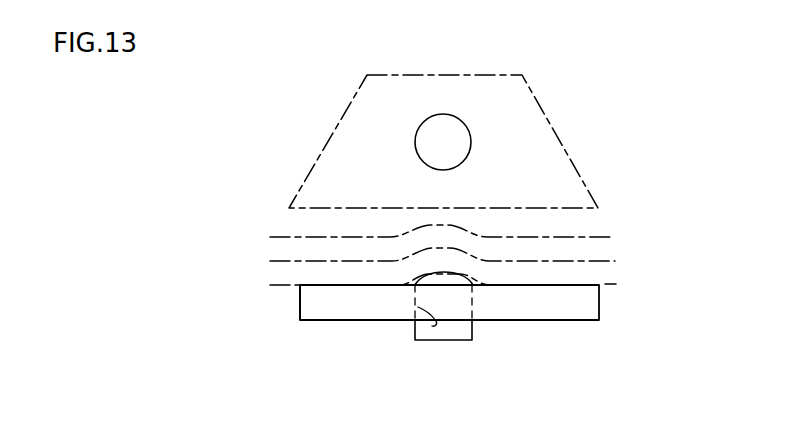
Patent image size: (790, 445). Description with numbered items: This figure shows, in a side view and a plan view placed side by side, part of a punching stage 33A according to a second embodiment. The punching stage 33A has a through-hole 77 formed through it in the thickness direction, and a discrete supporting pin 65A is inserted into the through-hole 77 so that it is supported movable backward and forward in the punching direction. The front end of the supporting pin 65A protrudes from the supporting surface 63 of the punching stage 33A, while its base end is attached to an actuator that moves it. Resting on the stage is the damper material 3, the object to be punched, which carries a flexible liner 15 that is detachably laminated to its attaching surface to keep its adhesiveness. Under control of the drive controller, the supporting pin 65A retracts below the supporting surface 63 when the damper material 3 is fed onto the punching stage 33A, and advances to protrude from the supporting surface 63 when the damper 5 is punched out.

The damper 5 is at (550, 127).
The supporting pin 65A is at (466, 126).
The damper material 3 is at (573, 243).
The flexible liner 15 is at (272, 284).
The supporting surface 63 is at (580, 285).
The punching stage 33A is at (326, 298).
The through-hole 77 is at (432, 325).